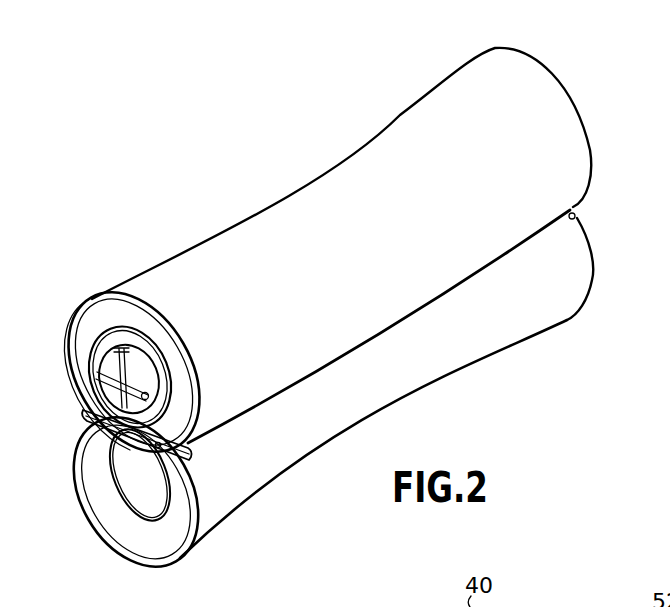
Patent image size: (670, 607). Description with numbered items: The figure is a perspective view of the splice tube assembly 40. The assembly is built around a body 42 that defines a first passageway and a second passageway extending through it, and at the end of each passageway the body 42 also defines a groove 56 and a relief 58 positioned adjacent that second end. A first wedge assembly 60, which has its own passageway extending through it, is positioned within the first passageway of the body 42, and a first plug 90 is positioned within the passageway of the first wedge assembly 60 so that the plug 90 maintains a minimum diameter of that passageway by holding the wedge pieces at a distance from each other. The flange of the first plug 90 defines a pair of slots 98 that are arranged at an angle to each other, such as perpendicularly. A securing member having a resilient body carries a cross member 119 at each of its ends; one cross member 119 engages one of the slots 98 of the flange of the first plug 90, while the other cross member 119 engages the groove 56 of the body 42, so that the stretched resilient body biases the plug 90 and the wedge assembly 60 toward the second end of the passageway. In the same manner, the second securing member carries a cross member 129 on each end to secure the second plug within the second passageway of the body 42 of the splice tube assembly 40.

The splice tube assembly 40 is at (132, 160).
The body 42 is at (323, 203).
The cross member 119 is at (146, 392).
The first wedge assembly 60 is at (118, 330).
The first plug 90 is at (97, 359).
The groove 56 is at (86, 413).
The slots 98 is at (93, 482).
The relief 58 is at (145, 538).
The cross member 129 is at (200, 497).